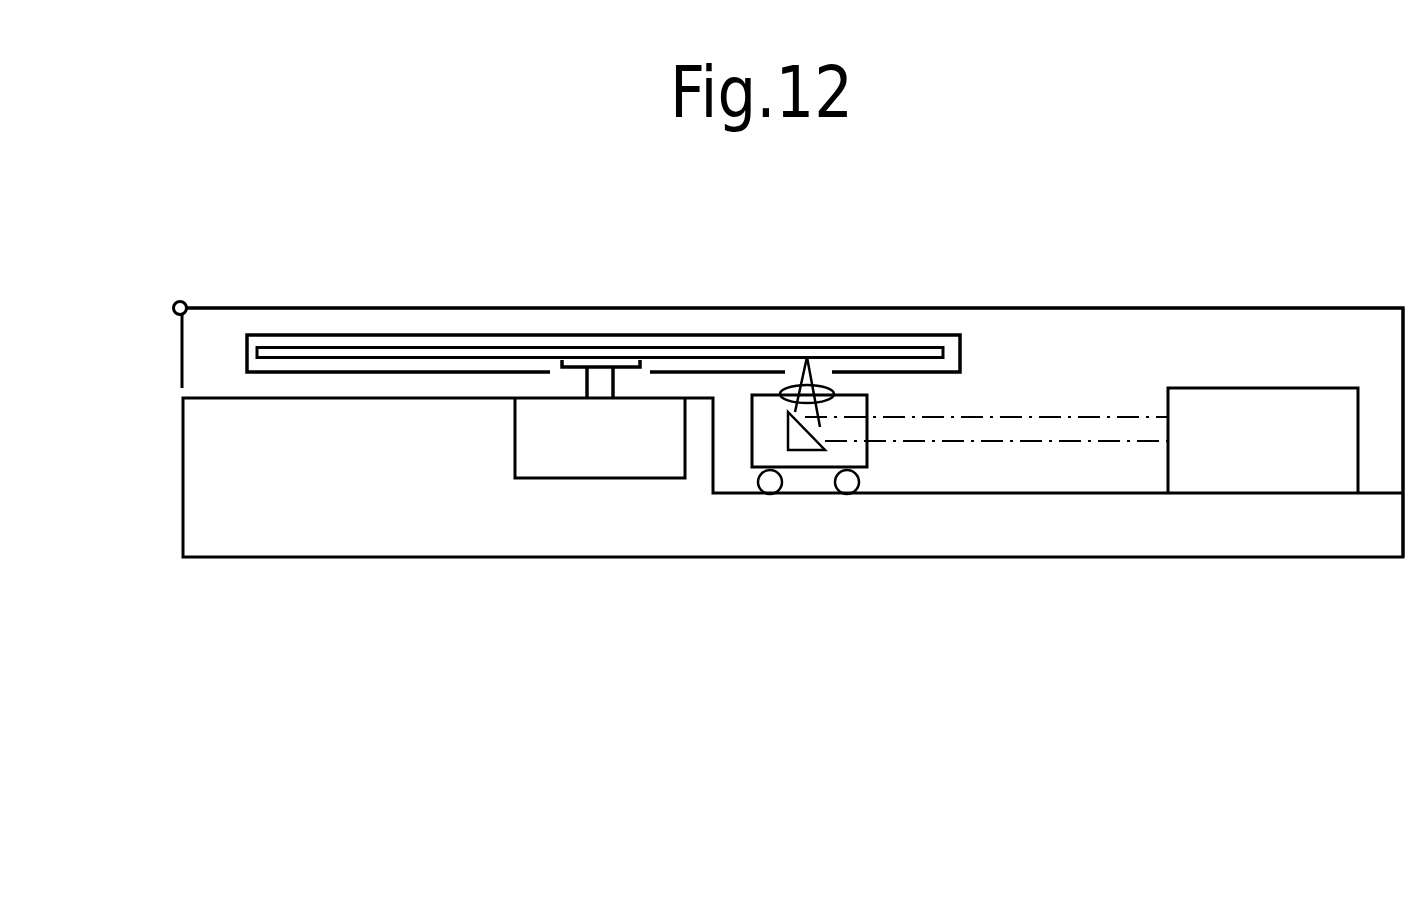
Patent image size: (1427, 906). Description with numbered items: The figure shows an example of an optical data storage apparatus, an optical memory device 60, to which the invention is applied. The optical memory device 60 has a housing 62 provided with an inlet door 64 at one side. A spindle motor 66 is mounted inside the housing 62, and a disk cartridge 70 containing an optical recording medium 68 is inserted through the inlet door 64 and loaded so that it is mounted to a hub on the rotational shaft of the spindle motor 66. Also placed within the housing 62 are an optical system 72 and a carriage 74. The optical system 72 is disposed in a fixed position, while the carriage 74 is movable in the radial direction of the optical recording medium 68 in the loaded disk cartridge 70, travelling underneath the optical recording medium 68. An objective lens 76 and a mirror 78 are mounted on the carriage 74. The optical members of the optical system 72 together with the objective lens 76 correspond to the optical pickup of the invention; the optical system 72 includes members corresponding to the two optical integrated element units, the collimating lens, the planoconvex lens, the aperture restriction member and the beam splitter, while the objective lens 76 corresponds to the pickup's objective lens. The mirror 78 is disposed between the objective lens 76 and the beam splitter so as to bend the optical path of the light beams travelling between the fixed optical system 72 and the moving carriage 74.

The optical memory device 60 is at (1112, 238).
The housing 62 is at (1170, 308).
The inlet door 64 is at (178, 342).
The spindle motor 66 is at (530, 468).
The optical recording medium 68 is at (697, 350).
The disk cartridge 70 is at (367, 335).
The optical system 72 is at (1223, 477).
The carriage 74 is at (820, 460).
The objective lens 76 is at (808, 393).
The mirror 78 is at (788, 430).